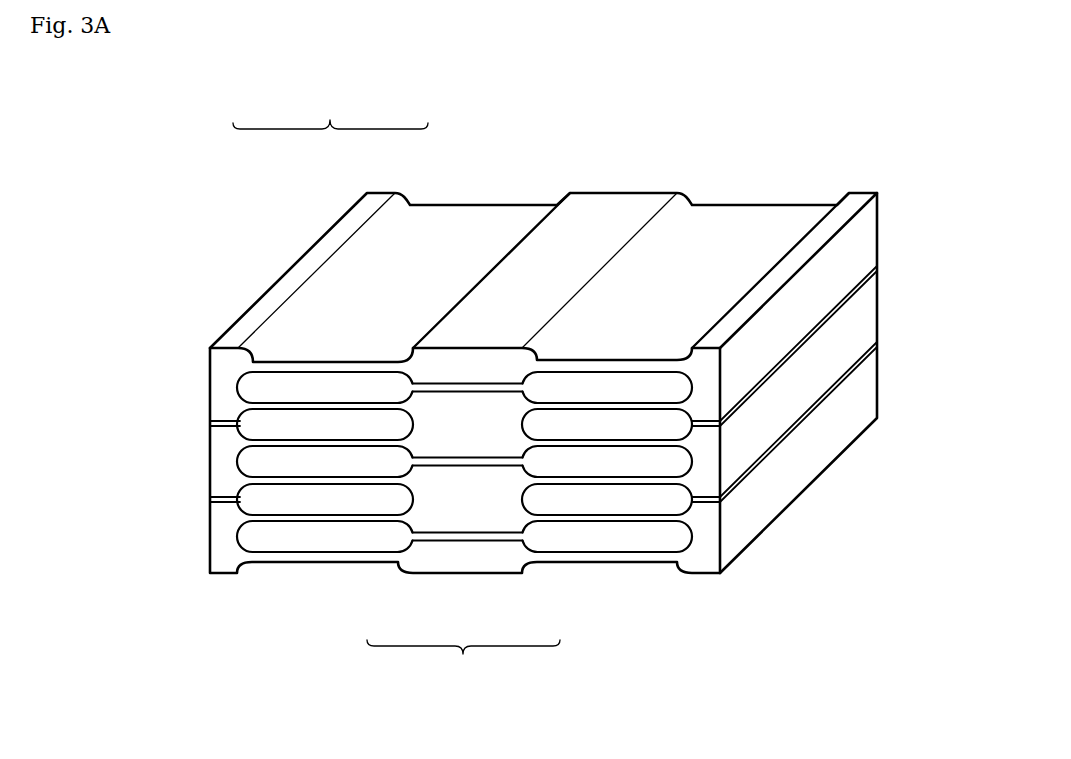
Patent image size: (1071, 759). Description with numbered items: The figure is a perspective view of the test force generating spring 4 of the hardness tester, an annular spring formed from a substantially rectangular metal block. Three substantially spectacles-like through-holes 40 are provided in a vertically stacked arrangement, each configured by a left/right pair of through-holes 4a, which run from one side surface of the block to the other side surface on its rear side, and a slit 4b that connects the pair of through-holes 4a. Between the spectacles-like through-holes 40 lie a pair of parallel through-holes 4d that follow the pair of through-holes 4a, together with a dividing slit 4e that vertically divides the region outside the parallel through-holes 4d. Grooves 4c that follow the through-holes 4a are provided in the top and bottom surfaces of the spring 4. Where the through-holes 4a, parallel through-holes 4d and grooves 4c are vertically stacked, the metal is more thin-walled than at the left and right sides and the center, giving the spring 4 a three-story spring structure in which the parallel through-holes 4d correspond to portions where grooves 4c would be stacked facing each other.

The test force generating spring 4 is at (679, 156).
The spectacles-like through-hole 40 is at (396, 387).
The through-hole 4a is at (322, 463).
The slit 4b is at (462, 465).
The groove 4c is at (503, 220).
The parallel through-hole 4d is at (263, 423).
The dividing slit 4e is at (212, 427).